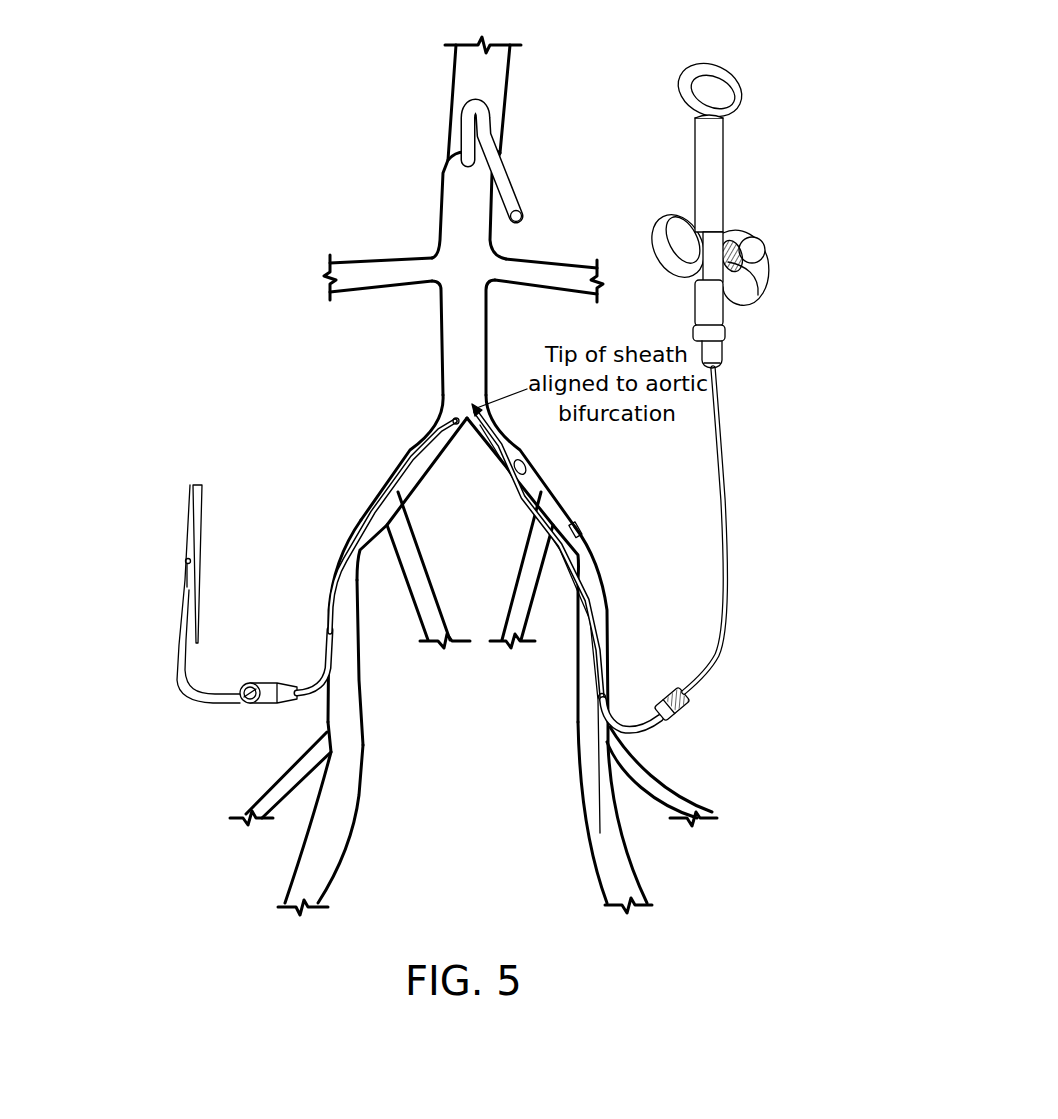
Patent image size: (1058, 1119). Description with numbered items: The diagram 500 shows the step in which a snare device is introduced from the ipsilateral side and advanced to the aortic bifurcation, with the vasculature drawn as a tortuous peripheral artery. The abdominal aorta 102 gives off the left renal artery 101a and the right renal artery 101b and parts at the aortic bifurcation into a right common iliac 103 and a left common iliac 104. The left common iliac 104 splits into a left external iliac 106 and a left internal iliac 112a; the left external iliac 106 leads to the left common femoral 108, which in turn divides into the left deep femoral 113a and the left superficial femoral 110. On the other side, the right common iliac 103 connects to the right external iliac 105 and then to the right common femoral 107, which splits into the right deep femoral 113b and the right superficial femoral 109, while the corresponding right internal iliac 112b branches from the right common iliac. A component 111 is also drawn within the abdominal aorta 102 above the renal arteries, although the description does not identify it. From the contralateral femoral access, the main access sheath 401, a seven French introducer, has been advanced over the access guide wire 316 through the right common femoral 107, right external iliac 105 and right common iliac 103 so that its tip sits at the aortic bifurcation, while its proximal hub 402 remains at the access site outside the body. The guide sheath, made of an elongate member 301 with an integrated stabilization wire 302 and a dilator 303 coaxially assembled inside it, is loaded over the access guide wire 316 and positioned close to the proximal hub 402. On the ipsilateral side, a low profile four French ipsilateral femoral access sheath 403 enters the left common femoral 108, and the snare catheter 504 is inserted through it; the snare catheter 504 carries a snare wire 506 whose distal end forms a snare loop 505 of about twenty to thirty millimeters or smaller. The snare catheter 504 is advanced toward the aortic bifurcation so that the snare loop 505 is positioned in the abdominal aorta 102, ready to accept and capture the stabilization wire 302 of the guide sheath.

The catheter system 500 is at (606, 52).
The catheter in aorta 111 is at (477, 139).
The left renal artery 101a is at (550, 258).
The right renal artery 101b is at (400, 256).
The abdominal aorta 102 is at (488, 308).
The right common iliac 103 is at (410, 452).
The left common iliac 104 is at (525, 437).
The right external iliac 105 is at (348, 518).
The left external iliac 106 is at (601, 540).
The right common femoral 107 is at (361, 665).
The left common femoral 108 is at (578, 693).
The right superficial femoral 109 is at (358, 803).
The left superficial femoral 110 is at (582, 832).
The left internal iliac 112a is at (520, 575).
The left internal iliac artery 112b is at (422, 543).
The left deep femoral 113a is at (655, 780).
The right deep femoral 113b is at (280, 775).
The elongate member 301 is at (190, 514).
The stabilization wire 302 is at (205, 562).
The dilator 303 is at (186, 575).
The access guide wire 316 is at (178, 677).
The main access sheath 401 is at (340, 601).
The proximal hub of the main access sheath 402 is at (245, 682).
The ipsilateral femoral access sheath 403 is at (629, 702).
The snare catheter 504 is at (602, 582).
The snare loop 505 is at (528, 466).
The snare wire 506 is at (580, 508).